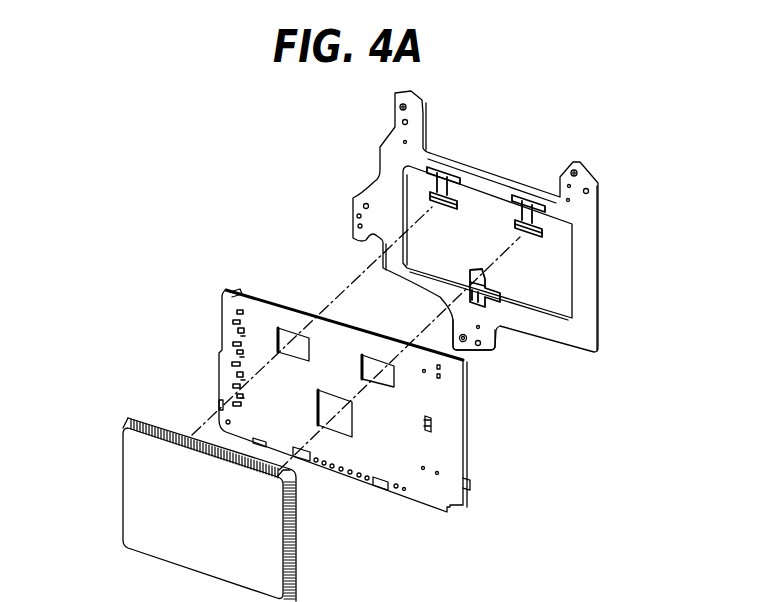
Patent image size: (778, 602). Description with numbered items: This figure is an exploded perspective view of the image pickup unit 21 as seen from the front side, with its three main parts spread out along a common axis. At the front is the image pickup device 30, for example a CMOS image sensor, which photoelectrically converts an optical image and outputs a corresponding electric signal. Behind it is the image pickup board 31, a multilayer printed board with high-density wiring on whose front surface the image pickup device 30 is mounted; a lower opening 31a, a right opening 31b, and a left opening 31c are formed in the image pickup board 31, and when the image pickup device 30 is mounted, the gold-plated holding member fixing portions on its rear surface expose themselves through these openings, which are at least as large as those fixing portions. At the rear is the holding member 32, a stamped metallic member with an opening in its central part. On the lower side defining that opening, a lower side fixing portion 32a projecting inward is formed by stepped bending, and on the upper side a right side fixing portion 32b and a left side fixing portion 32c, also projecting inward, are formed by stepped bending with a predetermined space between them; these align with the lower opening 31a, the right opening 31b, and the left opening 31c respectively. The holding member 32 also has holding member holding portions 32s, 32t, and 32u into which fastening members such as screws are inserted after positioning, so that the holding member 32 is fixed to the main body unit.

The image pickup unit 21 is at (226, 231).
The image pickup device 30 is at (126, 482).
The image pickup board 31 is at (226, 357).
The lower opening 31a is at (341, 438).
The right opening 31b is at (290, 328).
The left opening 31c is at (378, 356).
The holding member 32 is at (380, 183).
The lower side fixing portion 32a is at (497, 274).
The right side fixing portion 32b is at (443, 177).
The left side fixing portion 32c is at (530, 207).
The holding member holding portion 32s is at (481, 348).
The holding member holding portion 32t is at (398, 124).
The holding member holding portion 32u is at (588, 195).